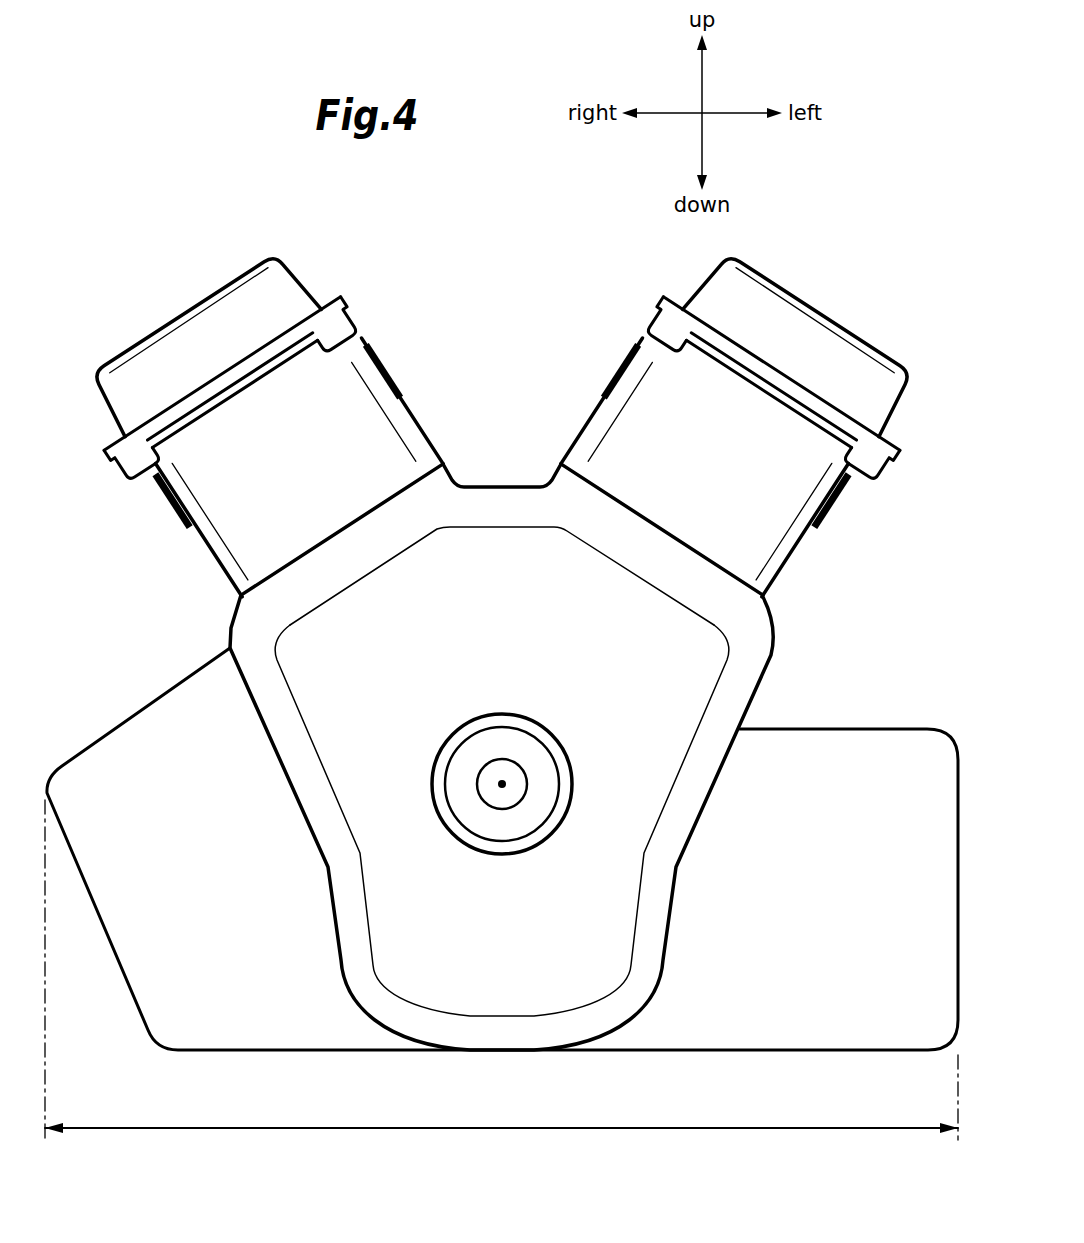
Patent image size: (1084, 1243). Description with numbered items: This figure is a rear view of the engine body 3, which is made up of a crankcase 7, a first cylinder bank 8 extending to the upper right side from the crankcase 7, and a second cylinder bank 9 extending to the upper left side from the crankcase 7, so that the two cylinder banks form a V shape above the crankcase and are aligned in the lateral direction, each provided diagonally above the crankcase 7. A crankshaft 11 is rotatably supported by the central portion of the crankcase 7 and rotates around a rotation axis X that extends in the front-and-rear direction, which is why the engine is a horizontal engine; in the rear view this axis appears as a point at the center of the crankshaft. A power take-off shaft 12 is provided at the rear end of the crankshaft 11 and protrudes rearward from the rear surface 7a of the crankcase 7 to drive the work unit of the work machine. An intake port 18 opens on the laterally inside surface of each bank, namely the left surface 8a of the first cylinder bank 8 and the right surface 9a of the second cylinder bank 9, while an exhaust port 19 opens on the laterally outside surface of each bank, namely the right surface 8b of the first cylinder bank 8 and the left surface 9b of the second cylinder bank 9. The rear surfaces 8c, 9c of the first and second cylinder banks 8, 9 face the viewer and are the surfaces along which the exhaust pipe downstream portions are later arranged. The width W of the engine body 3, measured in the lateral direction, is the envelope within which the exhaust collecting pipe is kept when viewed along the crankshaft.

The engine body 3 is at (306, 1058).
The crankcase 7 is at (501, 784).
The rear surface of the crankcase 7a is at (613, 945).
The first cylinder bank 8 is at (276, 426).
The inside surface of the first cylinder bank 8a is at (404, 400).
The outside surface of the first cylinder bank 8b is at (215, 558).
The rear surface of the first cylinder bank 8c is at (395, 449).
The second cylinder bank 9 is at (735, 426).
The inside surface of the second cylinder bank 9a is at (607, 403).
The outside surface of the second cylinder bank 9b is at (793, 566).
The rear surface of the second cylinder bank 9c is at (623, 448).
The crankshaft 11 is at (490, 812).
The power take-off shaft 12 is at (484, 766).
The intake port 18 is at (633, 360).
The exhaust port 19 is at (172, 507).
The rotation axis X is at (505, 780).
The width of the engine body W is at (501, 982).